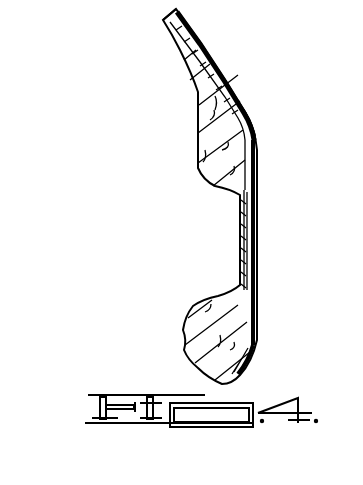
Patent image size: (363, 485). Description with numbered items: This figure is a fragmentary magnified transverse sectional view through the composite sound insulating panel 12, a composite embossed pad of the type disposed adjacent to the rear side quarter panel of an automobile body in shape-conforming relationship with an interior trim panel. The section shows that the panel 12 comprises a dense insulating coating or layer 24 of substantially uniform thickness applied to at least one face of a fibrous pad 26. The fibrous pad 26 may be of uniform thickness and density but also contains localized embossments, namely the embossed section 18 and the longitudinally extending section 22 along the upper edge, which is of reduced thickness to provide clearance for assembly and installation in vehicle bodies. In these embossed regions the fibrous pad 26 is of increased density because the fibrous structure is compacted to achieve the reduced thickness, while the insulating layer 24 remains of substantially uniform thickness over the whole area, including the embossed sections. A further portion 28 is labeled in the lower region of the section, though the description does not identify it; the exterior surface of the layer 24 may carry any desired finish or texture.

The composite sound insulating panel 12 is at (262, 163).
The embossed section 18 is at (250, 236).
The longitudinally extending section 22 is at (172, 26).
The dense insulating coating or layer 24 is at (247, 112).
The fibrous pad 26 is at (206, 144).
The lower flange portion 28 is at (253, 311).